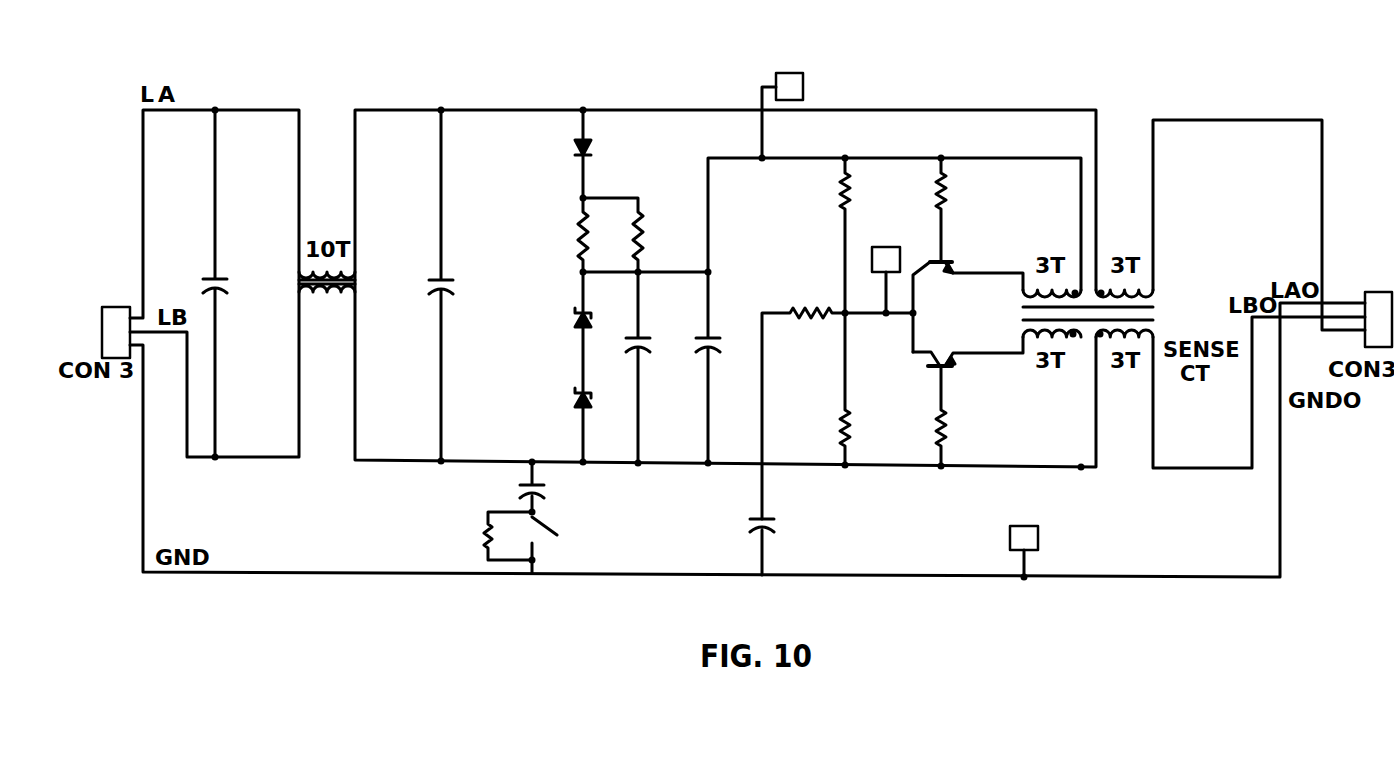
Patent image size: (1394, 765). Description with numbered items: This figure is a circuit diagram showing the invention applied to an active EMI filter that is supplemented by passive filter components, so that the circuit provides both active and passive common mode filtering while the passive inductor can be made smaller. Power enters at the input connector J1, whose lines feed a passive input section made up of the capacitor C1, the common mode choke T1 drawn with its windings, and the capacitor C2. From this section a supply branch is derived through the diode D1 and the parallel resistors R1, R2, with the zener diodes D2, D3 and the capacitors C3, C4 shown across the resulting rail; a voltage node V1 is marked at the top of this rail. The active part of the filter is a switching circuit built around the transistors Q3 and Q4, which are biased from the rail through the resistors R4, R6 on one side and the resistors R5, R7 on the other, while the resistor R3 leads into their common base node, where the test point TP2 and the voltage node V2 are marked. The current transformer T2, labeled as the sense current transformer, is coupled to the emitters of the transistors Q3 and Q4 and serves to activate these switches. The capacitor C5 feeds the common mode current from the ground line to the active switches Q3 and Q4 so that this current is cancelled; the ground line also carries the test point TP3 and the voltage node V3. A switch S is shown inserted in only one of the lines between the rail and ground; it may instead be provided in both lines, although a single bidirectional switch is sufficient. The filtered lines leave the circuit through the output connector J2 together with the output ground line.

The input connector J1 (CON 3) J1 is at (114, 318).
The capacitor C1 is at (231, 283).
The transformer/choke T1 (10T) T1 is at (347, 281).
The capacitor C2 is at (457, 285).
The diode D1 is at (562, 154).
The resistor R1 is at (565, 235).
The resistor R2 is at (645, 235).
The zener diode D2 is at (562, 332).
The zener diode D3 is at (562, 422).
The capacitor C3 is at (651, 367).
The capacitor C4 is at (888, 310).
The voltage test point V1 is at (804, 115).
The resistor R4 is at (863, 235).
The resistor R5 is at (864, 389).
The resistor R6 is at (961, 210).
The resistor R7 is at (960, 416).
The resistor R3 is at (837, 397).
The test point TP2 is at (891, 267).
The voltage V2 is at (919, 260).
The transistor Q3 is at (968, 297).
The transistor Q4 is at (968, 362).
The sense current transformer T2 is at (1107, 309).
The output connector J2 (CON3) J2 is at (1379, 307).
The switch S is at (583, 517).
The capacitor C5 is at (784, 543).
The test point TP3 is at (1031, 538).
The voltage V3 is at (1066, 537).